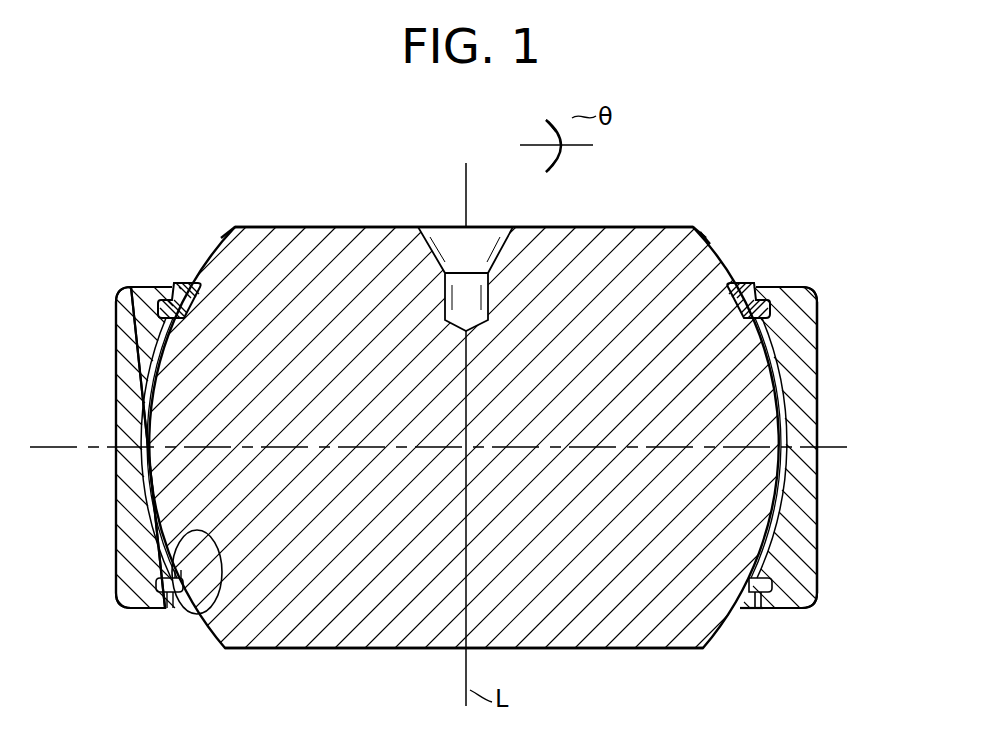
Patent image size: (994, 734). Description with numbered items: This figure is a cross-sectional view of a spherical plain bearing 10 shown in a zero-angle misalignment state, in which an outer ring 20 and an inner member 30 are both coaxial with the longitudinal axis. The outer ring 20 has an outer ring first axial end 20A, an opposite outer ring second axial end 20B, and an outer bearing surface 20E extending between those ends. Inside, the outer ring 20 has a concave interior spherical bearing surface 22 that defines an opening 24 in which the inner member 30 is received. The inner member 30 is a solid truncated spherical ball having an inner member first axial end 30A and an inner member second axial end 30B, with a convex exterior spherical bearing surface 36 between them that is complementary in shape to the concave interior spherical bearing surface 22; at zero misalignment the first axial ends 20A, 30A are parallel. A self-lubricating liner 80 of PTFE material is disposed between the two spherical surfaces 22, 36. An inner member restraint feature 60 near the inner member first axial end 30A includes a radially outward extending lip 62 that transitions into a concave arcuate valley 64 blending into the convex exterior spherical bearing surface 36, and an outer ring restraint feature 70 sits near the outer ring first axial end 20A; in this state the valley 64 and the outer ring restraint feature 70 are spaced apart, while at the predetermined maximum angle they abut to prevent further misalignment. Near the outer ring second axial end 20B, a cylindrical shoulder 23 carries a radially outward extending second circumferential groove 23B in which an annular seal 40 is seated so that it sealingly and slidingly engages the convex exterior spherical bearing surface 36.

The spherical plain bearing 10 is at (756, 150).
The outer ring 20 is at (793, 340).
The outer ring first axial end 20A is at (776, 285).
The outer ring second axial end 20B is at (800, 609).
The outer bearing surface 20E is at (818, 395).
The concave interior spherical bearing surface 22 is at (205, 600).
The cylindrical shoulder 23 is at (160, 582).
The second circumferential groove 23B is at (175, 607).
The opening 24 is at (748, 612).
The inner member 30 is at (652, 622).
The inner member first axial end 30A is at (328, 227).
The inner member second axial end 30B is at (312, 650).
The convex exterior spherical bearing surface 36 is at (210, 615).
The annular seal 40 is at (762, 585).
The inner member restraint feature 60 is at (215, 233).
The radially outward extending lip 62 is at (700, 226).
The concave arcuate valley 64 is at (712, 235).
The outer ring restraint feature 70 is at (176, 283).
The self-lubricating liner 80 is at (785, 460).